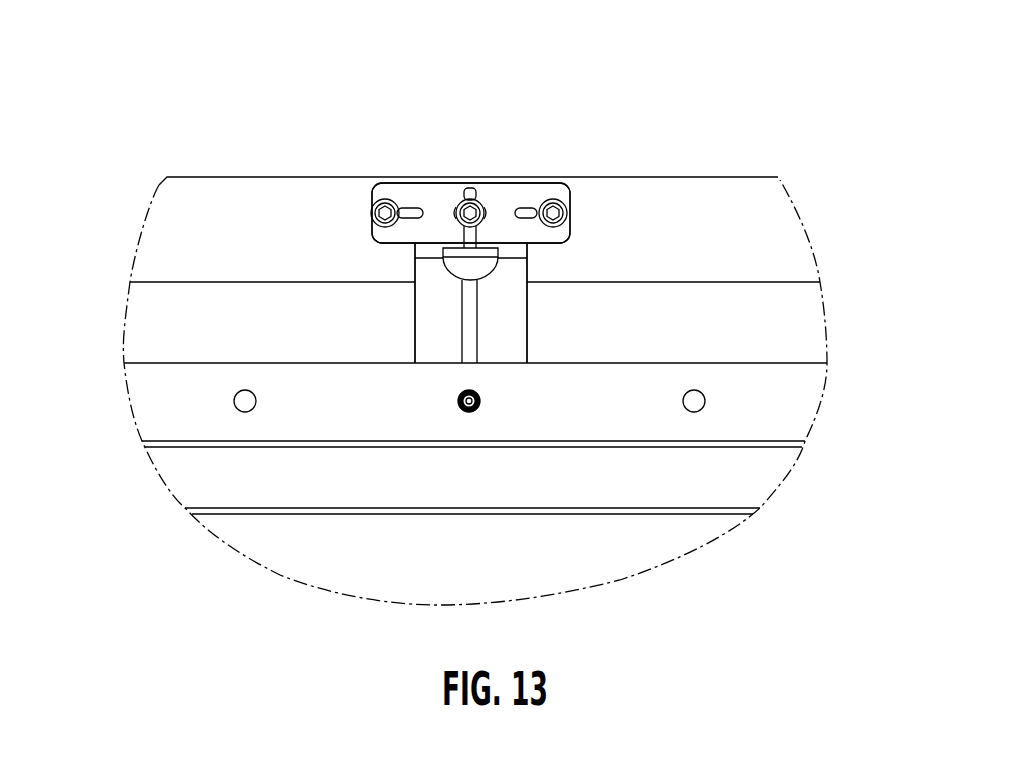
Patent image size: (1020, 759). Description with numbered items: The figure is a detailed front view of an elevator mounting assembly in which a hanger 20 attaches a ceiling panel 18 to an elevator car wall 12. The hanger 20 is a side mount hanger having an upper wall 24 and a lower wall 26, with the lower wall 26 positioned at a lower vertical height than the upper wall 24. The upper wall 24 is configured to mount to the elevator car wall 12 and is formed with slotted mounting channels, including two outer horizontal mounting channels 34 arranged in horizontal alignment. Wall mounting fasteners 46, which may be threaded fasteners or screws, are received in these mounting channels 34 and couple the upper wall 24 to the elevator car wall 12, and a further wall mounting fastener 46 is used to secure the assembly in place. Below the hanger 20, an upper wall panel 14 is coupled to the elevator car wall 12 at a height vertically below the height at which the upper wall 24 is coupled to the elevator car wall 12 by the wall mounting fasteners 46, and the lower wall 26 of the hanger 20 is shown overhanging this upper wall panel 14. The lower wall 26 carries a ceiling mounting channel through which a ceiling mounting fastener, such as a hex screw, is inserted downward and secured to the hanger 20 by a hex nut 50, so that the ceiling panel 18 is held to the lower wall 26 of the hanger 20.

The elevator car wall 12 is at (787, 223).
The upper wall panel 14 is at (790, 330).
The ceiling panel 18 is at (177, 409).
The hanger 20 is at (408, 187).
The upper wall 24 is at (390, 233).
The lower wall 26 is at (428, 322).
The outer horizontal mounting channels 34 is at (408, 207).
The wall mounting fasteners 46 is at (373, 206).
The hex nut 50 is at (481, 402).